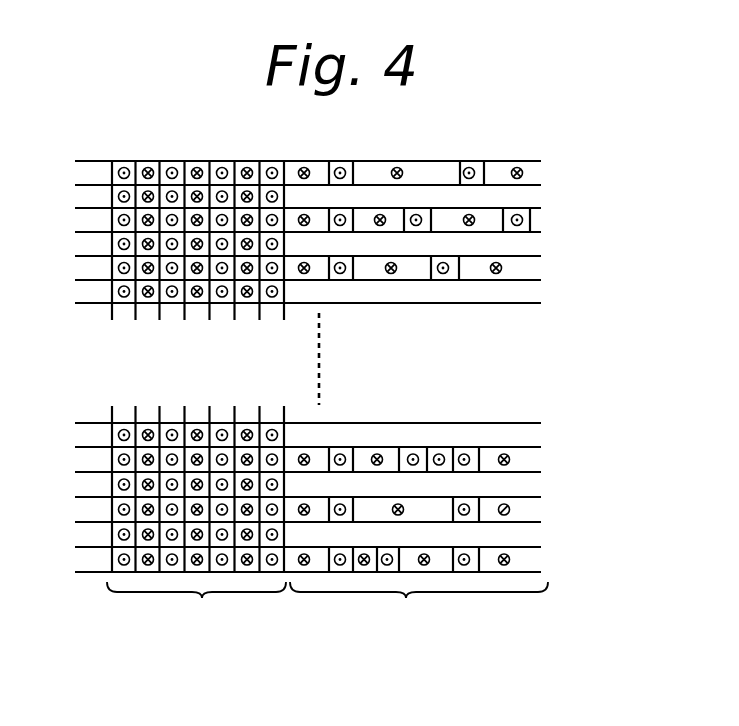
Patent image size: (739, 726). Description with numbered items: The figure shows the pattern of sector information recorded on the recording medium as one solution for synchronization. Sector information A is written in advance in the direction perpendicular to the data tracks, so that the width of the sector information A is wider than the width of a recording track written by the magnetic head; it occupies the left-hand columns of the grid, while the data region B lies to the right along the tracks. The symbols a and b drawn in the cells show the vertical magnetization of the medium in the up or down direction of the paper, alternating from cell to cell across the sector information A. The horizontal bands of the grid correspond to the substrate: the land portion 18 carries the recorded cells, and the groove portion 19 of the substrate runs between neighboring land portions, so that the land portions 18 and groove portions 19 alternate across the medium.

The land portion 18 is at (530, 173).
The groove portion 19 is at (530, 199).
The vertical magnetization symbol a is at (123, 160).
The vertical magnetization symbol b is at (153, 160).
The sector information A is at (201, 562).
The data area B is at (419, 580).